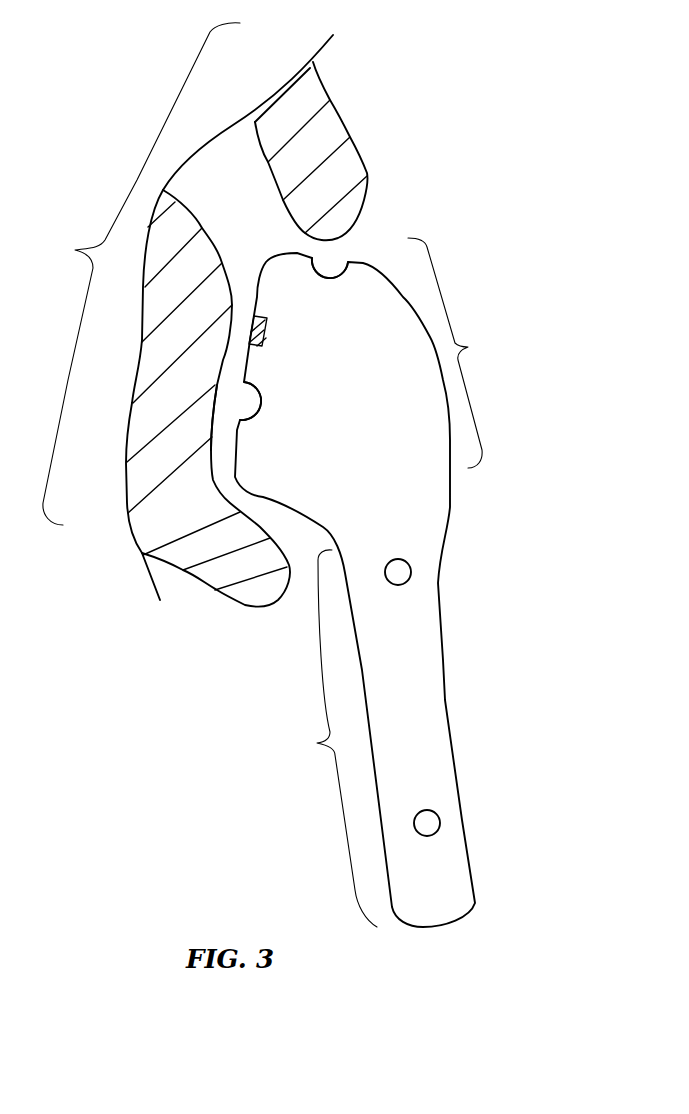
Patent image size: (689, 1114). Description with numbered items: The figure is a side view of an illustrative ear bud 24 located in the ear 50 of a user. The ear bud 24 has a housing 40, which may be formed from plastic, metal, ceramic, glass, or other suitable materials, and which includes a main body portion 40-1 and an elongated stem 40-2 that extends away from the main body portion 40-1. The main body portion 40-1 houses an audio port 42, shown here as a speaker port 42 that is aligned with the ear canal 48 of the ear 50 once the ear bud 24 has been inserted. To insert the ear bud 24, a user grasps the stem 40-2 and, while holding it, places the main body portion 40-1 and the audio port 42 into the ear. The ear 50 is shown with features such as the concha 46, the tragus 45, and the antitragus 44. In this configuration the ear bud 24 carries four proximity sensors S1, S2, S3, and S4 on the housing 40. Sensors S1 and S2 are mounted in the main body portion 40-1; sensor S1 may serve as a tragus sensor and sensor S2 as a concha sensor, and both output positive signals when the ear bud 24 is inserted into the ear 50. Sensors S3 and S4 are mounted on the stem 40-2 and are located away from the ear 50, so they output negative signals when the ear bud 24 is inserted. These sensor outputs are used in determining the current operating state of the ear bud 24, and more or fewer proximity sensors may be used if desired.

The ear bud 24 is at (496, 698).
The housing 40 is at (450, 507).
The main body portion 40-1 is at (459, 353).
The stem 40-2 is at (326, 738).
The audio port 42 is at (266, 333).
The antitragus 44 is at (222, 572).
The tragus 45 is at (209, 397).
The concha 46 is at (350, 170).
The ear canal 48 is at (238, 147).
The ear 50 is at (241, 338).
The proximity sensor S1 is at (260, 402).
The proximity sensor S2 is at (330, 277).
The proximity sensor S3 is at (402, 570).
The proximity sensor S4 is at (430, 823).